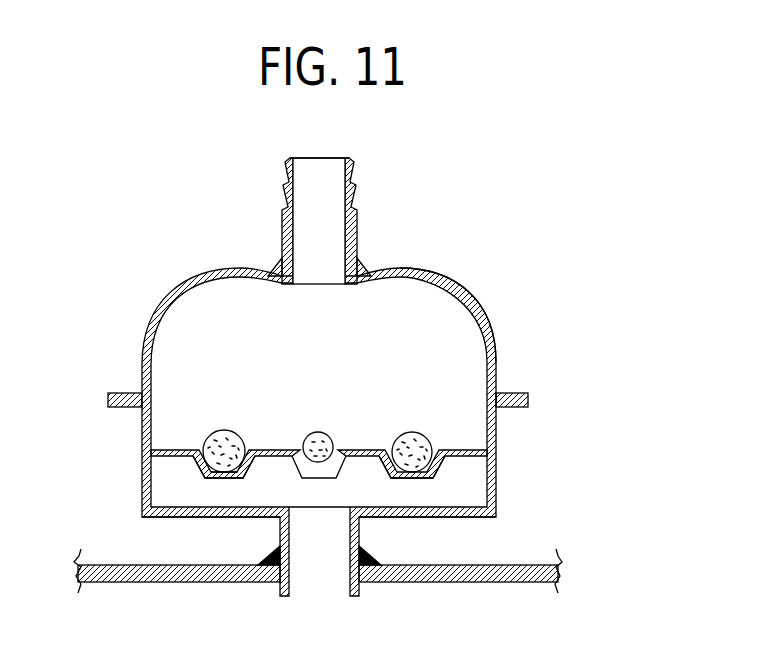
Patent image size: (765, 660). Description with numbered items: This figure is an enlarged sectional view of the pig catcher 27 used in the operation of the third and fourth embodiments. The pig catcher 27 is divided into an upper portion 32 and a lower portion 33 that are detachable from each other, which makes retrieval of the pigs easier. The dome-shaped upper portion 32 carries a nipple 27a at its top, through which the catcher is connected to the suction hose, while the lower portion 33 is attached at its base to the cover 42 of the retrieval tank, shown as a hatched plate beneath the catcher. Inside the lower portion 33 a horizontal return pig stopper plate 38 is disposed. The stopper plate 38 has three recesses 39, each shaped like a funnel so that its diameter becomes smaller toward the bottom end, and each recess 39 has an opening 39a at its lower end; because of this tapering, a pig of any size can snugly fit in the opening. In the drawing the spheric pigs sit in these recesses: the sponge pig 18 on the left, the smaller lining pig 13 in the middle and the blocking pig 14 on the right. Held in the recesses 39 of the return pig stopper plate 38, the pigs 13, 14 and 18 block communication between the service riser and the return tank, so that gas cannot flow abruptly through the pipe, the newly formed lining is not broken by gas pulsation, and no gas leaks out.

The pig catcher 27 is at (456, 286).
The nipple 27a is at (352, 162).
The upper portion 32 is at (490, 334).
The lower portion 33 is at (497, 505).
The return pig stopper plate 38 is at (465, 452).
The recess 39 is at (197, 462).
The opening 39a is at (222, 478).
The sponge pig 18 is at (218, 432).
The lining pig 13 is at (314, 432).
The blocking pig 14 is at (417, 433).
The cover 42 is at (462, 583).